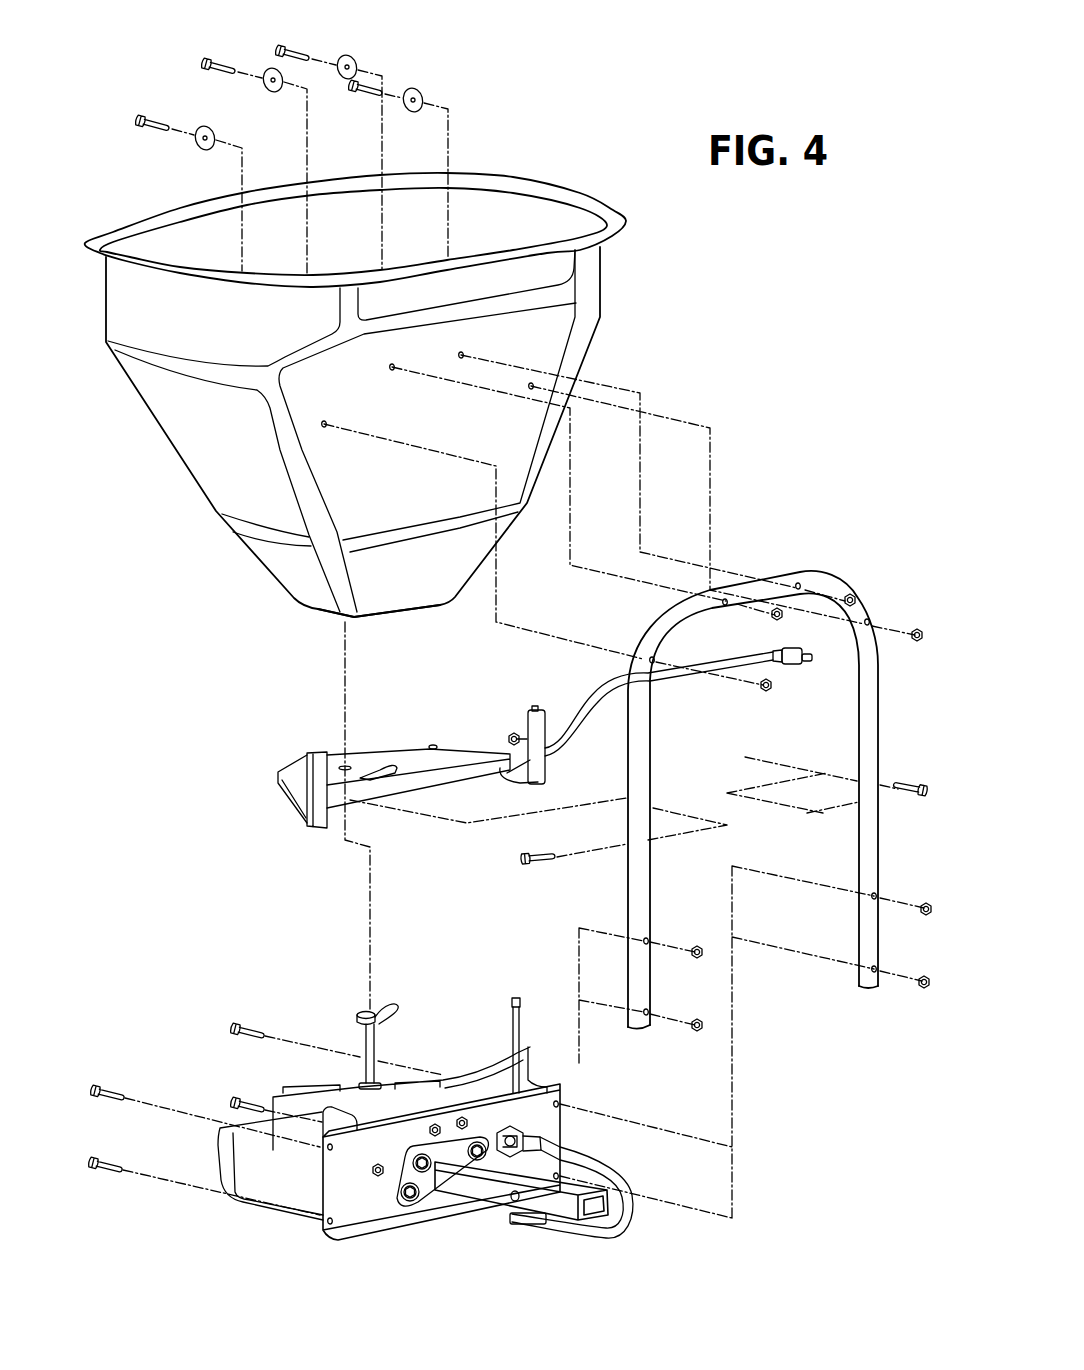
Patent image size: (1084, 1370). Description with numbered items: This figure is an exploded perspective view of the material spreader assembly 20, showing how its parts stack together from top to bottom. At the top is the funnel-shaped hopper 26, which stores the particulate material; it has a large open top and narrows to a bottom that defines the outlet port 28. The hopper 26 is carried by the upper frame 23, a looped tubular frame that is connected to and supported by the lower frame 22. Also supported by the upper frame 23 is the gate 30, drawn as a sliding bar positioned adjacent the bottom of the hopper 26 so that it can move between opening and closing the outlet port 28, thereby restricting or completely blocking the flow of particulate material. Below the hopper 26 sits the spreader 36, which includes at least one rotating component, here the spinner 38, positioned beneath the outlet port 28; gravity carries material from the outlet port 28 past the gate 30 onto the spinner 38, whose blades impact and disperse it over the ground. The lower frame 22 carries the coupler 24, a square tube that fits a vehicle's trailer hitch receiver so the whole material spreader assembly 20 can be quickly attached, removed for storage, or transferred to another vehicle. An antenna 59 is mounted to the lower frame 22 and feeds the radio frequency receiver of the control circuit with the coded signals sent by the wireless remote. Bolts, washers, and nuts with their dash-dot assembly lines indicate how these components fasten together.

The material spreader assembly 20 is at (508, 652).
The lower frame 22 is at (481, 1160).
The upper frame 23 is at (753, 801).
The coupler 24 is at (521, 1210).
The hopper 26 is at (355, 431).
The outlet port 28 is at (385, 647).
The gate 30 is at (525, 738).
The spreader 36 is at (370, 1150).
The spinner 38 is at (351, 1037).
The antenna 59 is at (492, 1013).